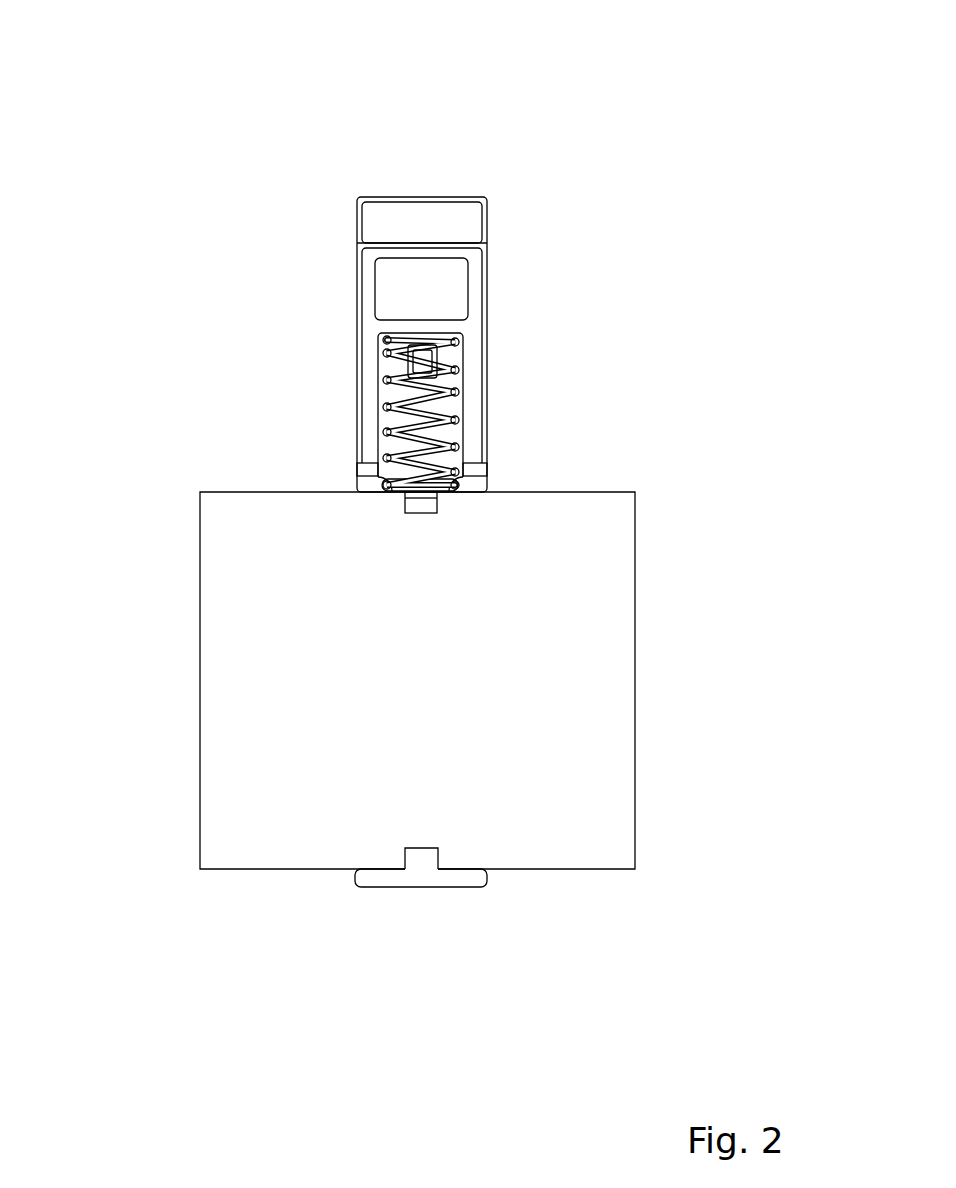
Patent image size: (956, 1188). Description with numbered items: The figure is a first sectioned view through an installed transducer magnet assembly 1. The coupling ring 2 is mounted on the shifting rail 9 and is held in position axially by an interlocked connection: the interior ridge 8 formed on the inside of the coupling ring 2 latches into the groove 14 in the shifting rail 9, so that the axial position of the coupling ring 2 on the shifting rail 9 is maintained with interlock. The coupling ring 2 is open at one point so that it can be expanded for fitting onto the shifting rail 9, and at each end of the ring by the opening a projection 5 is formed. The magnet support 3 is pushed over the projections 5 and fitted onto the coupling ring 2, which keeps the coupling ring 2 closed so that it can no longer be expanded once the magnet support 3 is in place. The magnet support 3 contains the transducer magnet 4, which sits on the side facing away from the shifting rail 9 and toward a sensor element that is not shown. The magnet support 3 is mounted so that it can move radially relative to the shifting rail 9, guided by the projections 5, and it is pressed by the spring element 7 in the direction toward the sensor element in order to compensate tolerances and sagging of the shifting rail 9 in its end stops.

The transducer magnet assembly 1 is at (441, 170).
The coupling ring 2 is at (428, 878).
The magnet support 3 is at (367, 328).
The transducer magnet 4 is at (440, 292).
The projection 5 is at (410, 398).
The spring element 7 is at (440, 385).
The interior ridge 8 is at (417, 858).
The shifting rail 9 is at (560, 655).
The groove 14 is at (422, 513).